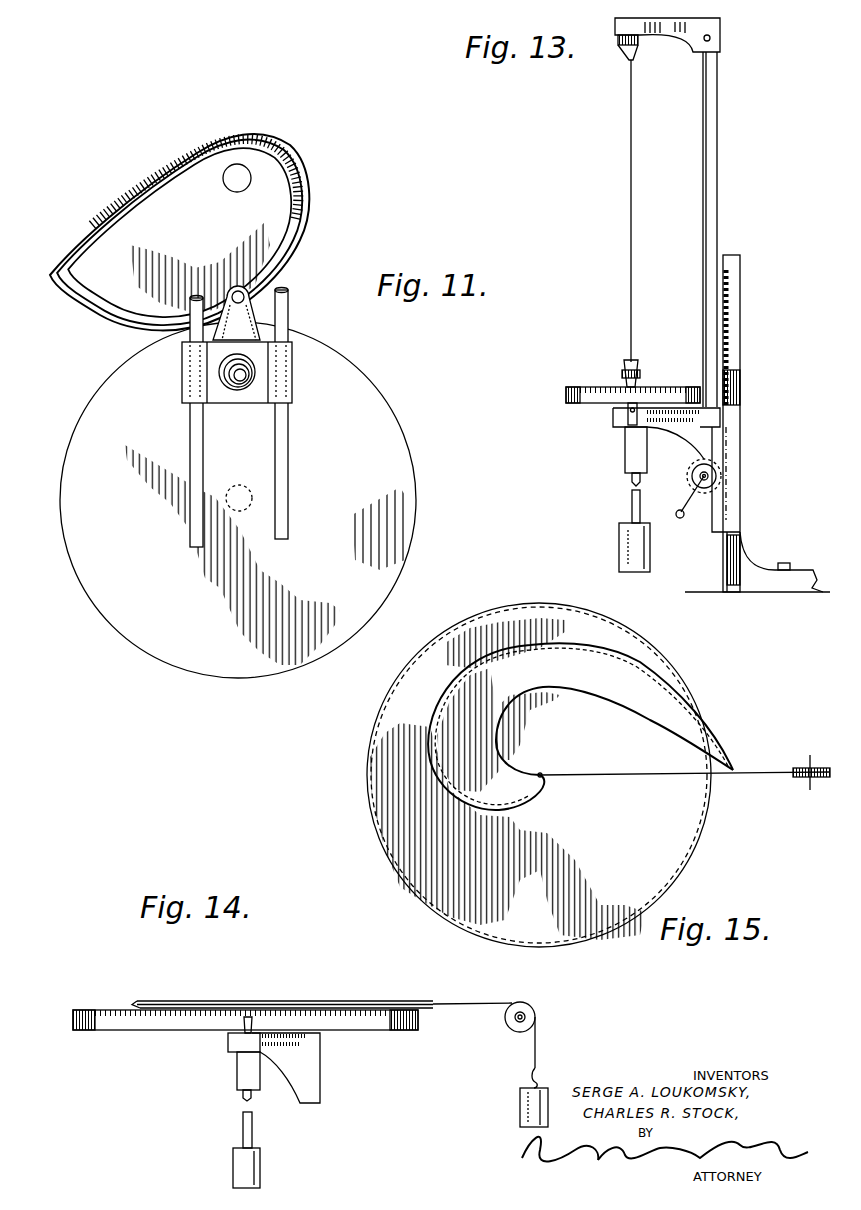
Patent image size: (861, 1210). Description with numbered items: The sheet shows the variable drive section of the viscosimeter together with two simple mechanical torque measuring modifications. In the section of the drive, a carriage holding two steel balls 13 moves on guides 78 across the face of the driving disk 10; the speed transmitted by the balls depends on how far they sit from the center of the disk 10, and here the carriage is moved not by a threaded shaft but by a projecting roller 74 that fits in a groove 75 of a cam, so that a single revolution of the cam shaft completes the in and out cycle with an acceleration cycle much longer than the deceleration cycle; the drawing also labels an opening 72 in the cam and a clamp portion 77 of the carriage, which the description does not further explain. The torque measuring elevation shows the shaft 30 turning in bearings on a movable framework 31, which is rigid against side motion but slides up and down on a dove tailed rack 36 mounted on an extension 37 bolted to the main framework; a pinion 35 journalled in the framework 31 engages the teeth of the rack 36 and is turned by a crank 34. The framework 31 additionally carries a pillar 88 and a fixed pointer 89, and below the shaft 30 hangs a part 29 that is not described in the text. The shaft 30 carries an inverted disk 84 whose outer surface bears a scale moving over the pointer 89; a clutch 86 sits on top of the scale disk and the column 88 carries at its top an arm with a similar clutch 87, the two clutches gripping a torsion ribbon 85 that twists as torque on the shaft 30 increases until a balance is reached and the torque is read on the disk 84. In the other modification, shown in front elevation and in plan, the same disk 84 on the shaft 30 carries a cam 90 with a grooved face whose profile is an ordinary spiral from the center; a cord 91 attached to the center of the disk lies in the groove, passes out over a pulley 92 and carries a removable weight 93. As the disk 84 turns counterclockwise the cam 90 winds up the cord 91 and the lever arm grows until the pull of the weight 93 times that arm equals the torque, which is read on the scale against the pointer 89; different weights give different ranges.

In FIG. 11, the disk 10 is at (398, 473).
In FIG. 11, the steel balls 13 is at (237, 390).
In FIG. 13, the weight 29 is at (619, 542).
In FIG. 14, the weight 29 is at (233, 1168).
In FIG. 13, the shaft 30 is at (632, 502).
In FIG. 14, the shaft 30 is at (243, 1120).
In FIG. 13, the movable framework 31 is at (690, 425).
In FIG. 13, the crank 34 is at (683, 519).
In FIG. 13, the pinion 35 is at (687, 476).
In FIG. 13, the dove tailed rack 36 is at (727, 327).
In FIG. 13, the extension 37 is at (738, 382).
In FIG. 14, the extension 37 is at (322, 1075).
In FIG. 11, the hole 72 is at (247, 170).
In FIG. 11, the projecting roller 74 is at (234, 293).
In FIG. 11, the groove 75 is at (155, 180).
In FIG. 11, the clamp block 77 is at (262, 385).
In FIG. 11, the guides 78 is at (183, 513).
In FIG. 13, the disk 84 is at (672, 387).
In FIG. 15, the disk 84 is at (372, 800).
In FIG. 14, the disk 84 is at (148, 1030).
In FIG. 13, the torsion ribbon 85 is at (628, 117).
In FIG. 13, the clutch 86 is at (622, 368).
In FIG. 13, the clutch 87 is at (622, 60).
In FIG. 13, the pillar 88 is at (717, 182).
In FIG. 13, the fixed pointer 89 is at (626, 408).
In FIG. 14, the fixed pointer 89 is at (242, 1033).
In FIG. 15, the cam 90 is at (561, 668).
In FIG. 14, the cam 90 is at (293, 1003).
In FIG. 15, the cord 91 is at (615, 777).
In FIG. 14, the cord 91 is at (474, 1011).
In FIG. 15, the pulley 92 is at (800, 778).
In FIG. 14, the pulley 92 is at (537, 1012).
In FIG. 14, the removable weight 93 is at (520, 1106).